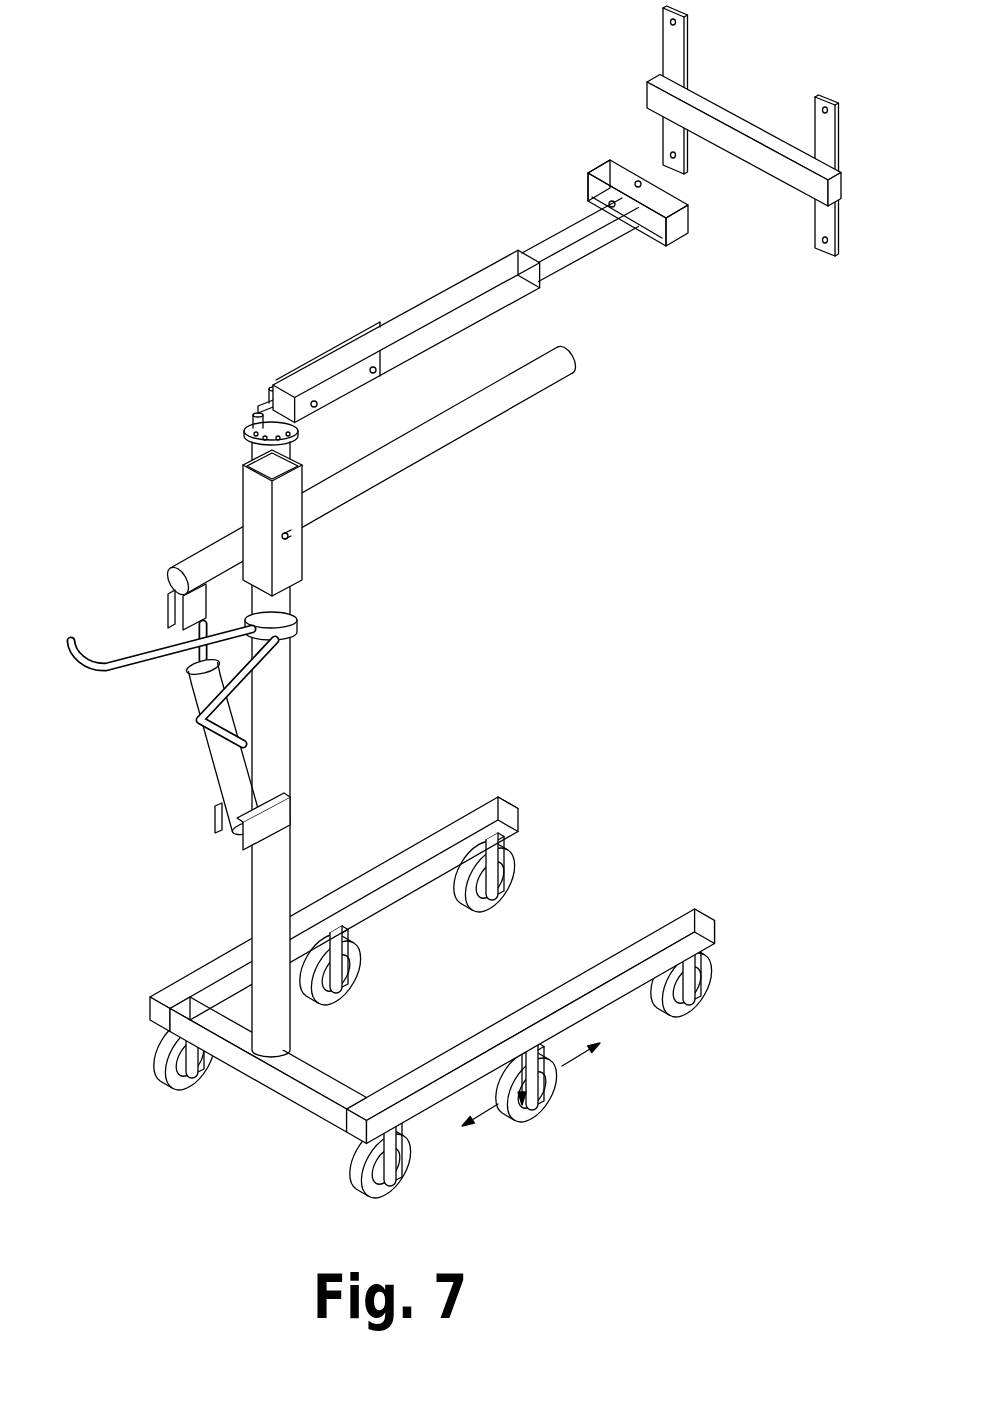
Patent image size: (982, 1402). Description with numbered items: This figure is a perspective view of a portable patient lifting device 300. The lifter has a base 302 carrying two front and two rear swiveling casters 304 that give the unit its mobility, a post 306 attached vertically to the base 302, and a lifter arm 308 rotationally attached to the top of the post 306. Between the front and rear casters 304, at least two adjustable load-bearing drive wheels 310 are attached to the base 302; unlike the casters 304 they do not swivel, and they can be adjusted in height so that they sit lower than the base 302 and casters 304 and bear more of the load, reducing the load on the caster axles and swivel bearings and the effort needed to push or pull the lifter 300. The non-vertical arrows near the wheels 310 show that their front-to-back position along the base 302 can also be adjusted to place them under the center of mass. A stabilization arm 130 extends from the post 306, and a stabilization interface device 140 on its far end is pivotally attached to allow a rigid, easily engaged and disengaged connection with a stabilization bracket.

The portable patient lifting device 300 is at (445, 606).
The base 302 is at (340, 1070).
The swiveling casters 304 is at (518, 863).
The post 306 is at (254, 905).
The lifter arm 308 is at (507, 403).
The load-bearing drive wheels 310 is at (353, 930).
The stabilization arm 130 is at (343, 336).
The stabilization interface device 140 is at (658, 105).